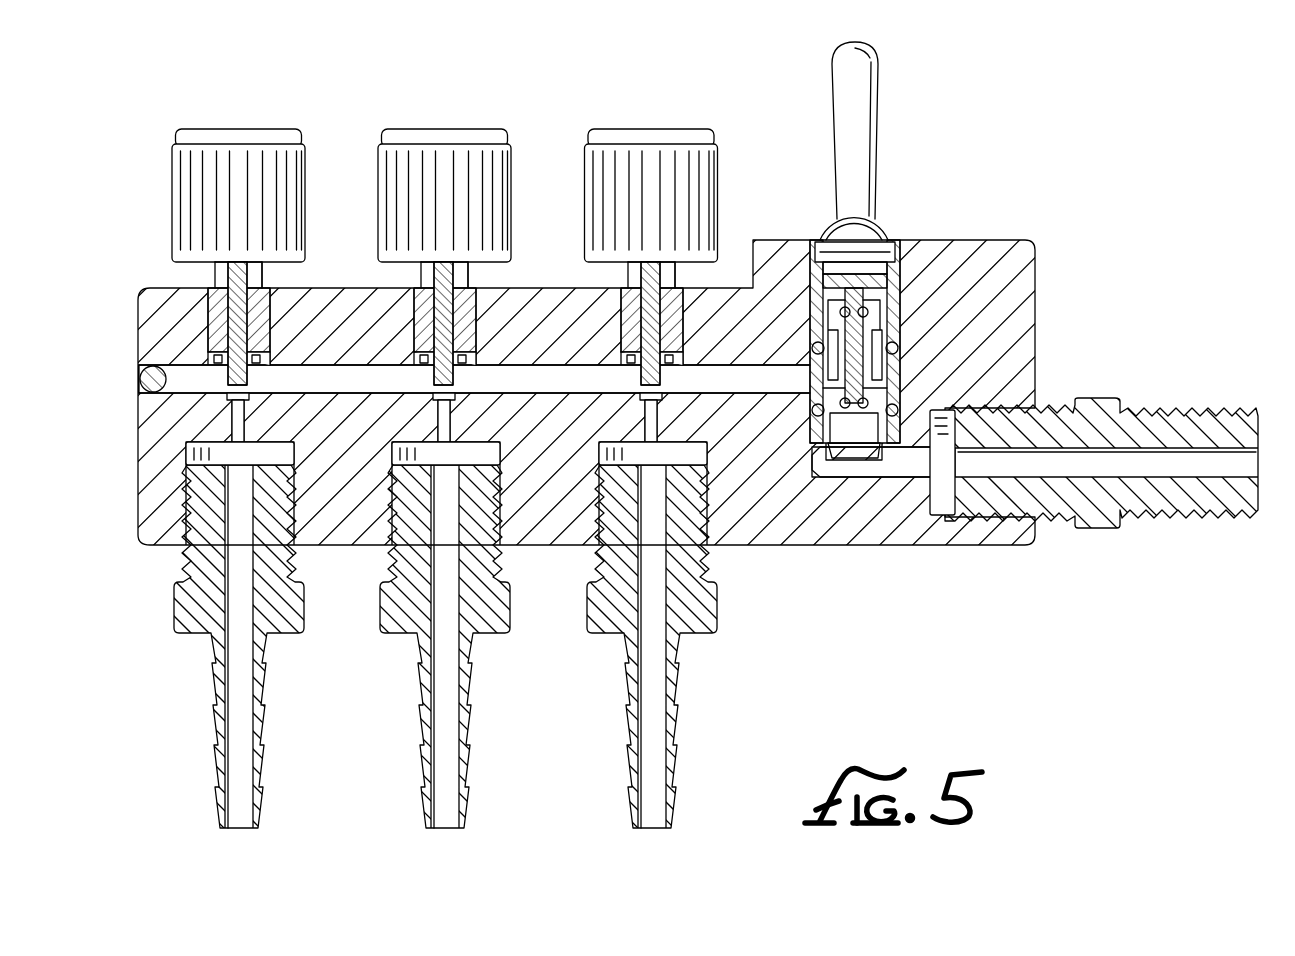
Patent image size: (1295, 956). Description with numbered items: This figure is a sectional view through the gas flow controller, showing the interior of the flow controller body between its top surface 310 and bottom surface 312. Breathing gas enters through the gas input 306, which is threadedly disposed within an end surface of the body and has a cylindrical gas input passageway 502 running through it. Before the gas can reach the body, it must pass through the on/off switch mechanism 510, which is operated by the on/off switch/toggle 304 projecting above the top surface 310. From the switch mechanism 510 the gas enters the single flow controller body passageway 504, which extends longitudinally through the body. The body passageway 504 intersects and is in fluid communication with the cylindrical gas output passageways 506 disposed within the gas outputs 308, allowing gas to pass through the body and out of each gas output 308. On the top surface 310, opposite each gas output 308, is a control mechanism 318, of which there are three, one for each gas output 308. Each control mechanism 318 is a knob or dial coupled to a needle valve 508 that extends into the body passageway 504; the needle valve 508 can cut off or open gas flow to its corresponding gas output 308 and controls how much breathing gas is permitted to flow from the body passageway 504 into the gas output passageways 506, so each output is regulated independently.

The on/off switch/toggle 304 is at (853, 113).
The gas input 306 is at (1160, 406).
The gas output 308 is at (265, 763).
The top surface 310 is at (738, 276).
The bottom surface 312 is at (832, 548).
The control mechanism 318 is at (220, 128).
The gas input passageway 502 is at (1208, 466).
The flow controller body passageway 504 is at (193, 378).
The gas output passageway 506 is at (240, 717).
The needle valve 508 is at (218, 322).
The on/off switch mechanism 510 is at (905, 333).